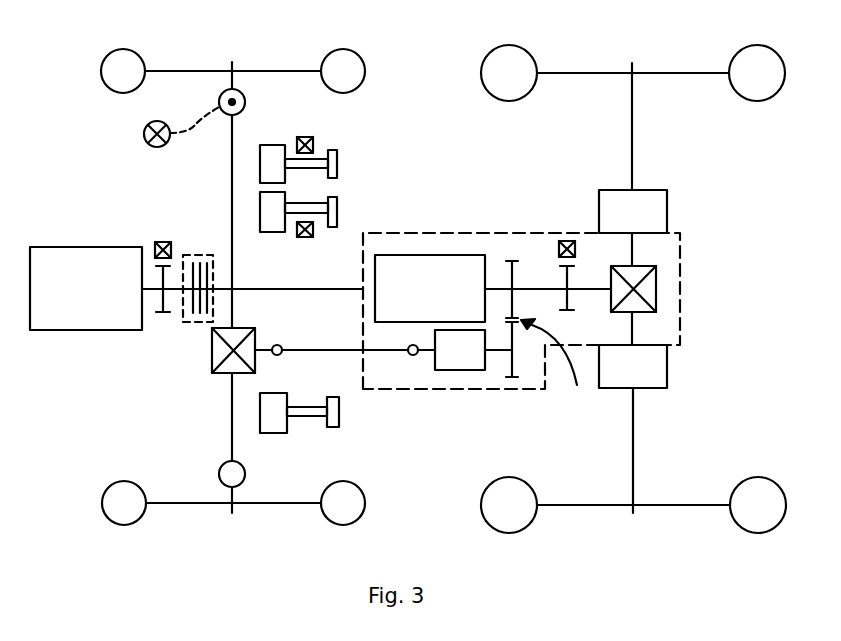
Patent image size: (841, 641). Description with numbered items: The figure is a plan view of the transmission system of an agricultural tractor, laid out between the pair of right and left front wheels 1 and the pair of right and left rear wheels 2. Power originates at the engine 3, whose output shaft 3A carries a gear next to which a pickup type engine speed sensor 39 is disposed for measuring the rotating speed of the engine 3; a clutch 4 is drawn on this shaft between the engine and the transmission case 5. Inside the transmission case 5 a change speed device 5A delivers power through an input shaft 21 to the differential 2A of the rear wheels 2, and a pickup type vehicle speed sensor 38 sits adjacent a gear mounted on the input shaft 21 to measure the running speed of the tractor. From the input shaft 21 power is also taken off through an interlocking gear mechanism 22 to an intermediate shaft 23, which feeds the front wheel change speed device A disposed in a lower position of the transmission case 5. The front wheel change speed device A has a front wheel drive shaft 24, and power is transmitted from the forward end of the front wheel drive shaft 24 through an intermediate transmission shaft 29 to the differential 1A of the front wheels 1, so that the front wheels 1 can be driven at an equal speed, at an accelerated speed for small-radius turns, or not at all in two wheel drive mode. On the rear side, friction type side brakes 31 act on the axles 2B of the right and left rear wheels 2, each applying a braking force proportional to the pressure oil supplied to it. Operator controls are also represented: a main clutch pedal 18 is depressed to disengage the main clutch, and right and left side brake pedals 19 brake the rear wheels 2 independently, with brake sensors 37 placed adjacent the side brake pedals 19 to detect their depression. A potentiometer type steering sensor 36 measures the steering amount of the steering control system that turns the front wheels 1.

The front wheels 1 is at (105, 68).
The differential of front wheels 1A is at (212, 352).
The rear wheels 2 is at (486, 78).
The differential of rear wheels 2A is at (656, 289).
The axles of rear wheels 2B is at (634, 133).
The engine 3 is at (74, 307).
The output shaft of engine 3A is at (172, 293).
The clutch 4 is at (200, 254).
The transmission case 5 is at (462, 232).
The change speed device 5A is at (404, 268).
The main clutch pedal 18 is at (274, 420).
The side brake pedals 19 is at (274, 208).
The input shaft 21 is at (539, 283).
The interlocking gear mechanism 22 is at (557, 368).
The intermediate shaft 23 is at (498, 352).
The front wheel drive shaft 24 is at (432, 370).
The intermediate transmission shaft 29 is at (346, 346).
The side brakes 31 is at (650, 212).
The steering sensor 36 is at (144, 135).
The brake sensors 37 is at (306, 136).
The vehicle speed sensor 38 is at (568, 240).
The engine speed sensor 39 is at (162, 242).
The front wheel change speed device A is at (463, 360).